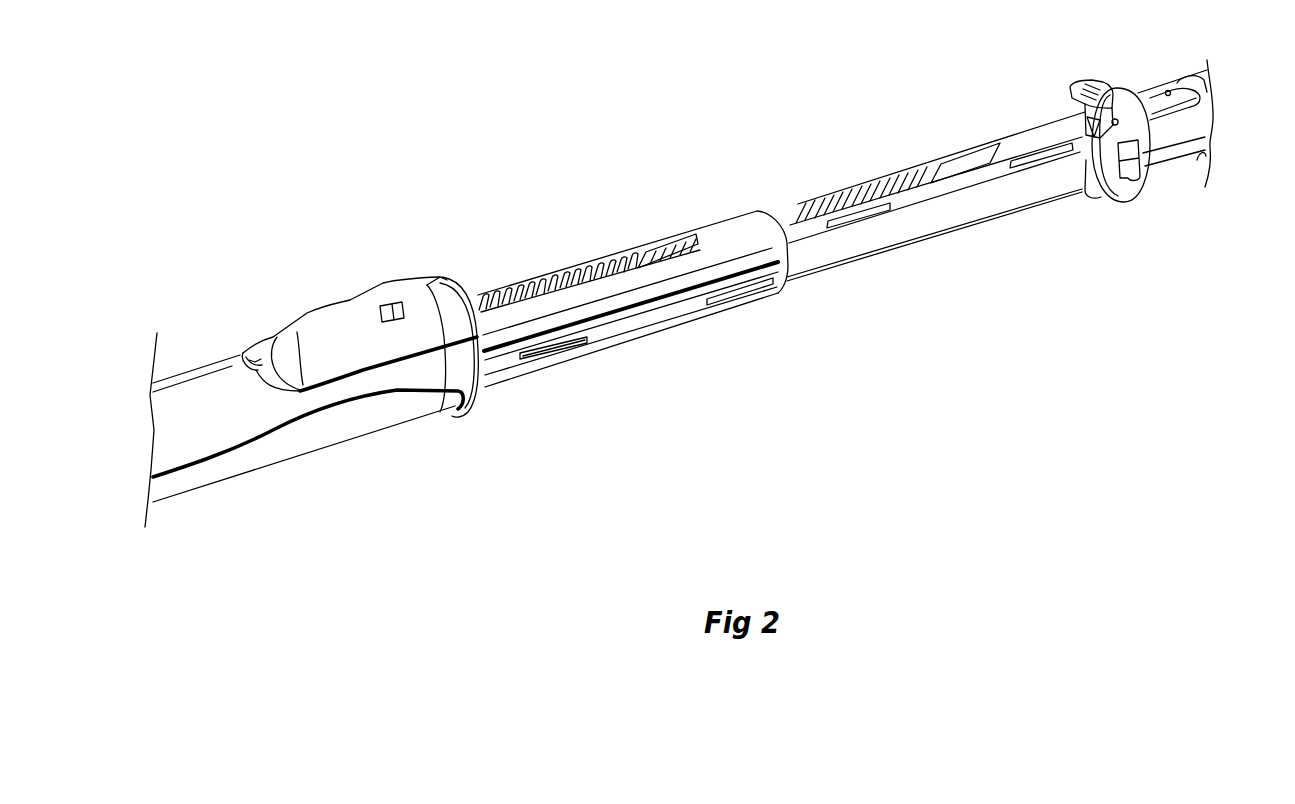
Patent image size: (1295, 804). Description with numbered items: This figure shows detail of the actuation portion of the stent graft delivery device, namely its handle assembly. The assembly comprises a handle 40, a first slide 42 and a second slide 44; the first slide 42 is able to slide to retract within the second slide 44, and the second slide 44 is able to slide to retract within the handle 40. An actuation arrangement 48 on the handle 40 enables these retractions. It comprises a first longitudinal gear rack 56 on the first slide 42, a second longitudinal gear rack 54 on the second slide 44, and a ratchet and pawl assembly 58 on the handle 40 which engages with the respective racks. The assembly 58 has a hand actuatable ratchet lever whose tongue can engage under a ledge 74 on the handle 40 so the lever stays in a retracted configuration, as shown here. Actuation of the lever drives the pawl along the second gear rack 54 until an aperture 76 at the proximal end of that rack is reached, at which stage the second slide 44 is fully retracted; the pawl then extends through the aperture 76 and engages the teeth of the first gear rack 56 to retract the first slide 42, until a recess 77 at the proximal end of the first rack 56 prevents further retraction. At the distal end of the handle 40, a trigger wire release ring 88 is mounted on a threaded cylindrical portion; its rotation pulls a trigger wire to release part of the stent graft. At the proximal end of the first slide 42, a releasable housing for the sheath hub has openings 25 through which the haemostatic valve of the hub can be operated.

The openings 25 is at (1143, 90).
The handle 40 is at (283, 460).
The first slide 42 is at (937, 217).
The second slide 44 is at (667, 320).
The actuation arrangement 48 is at (340, 285).
The second longitudinal gear rack 54 is at (533, 285).
The first longitudinal gear rack 56 is at (845, 195).
The ratchet and pawl assembly 58 is at (400, 347).
The ledge 74 is at (217, 363).
The aperture 76 is at (650, 247).
The recess 77 is at (958, 160).
The trigger wire release ring 88 is at (240, 357).